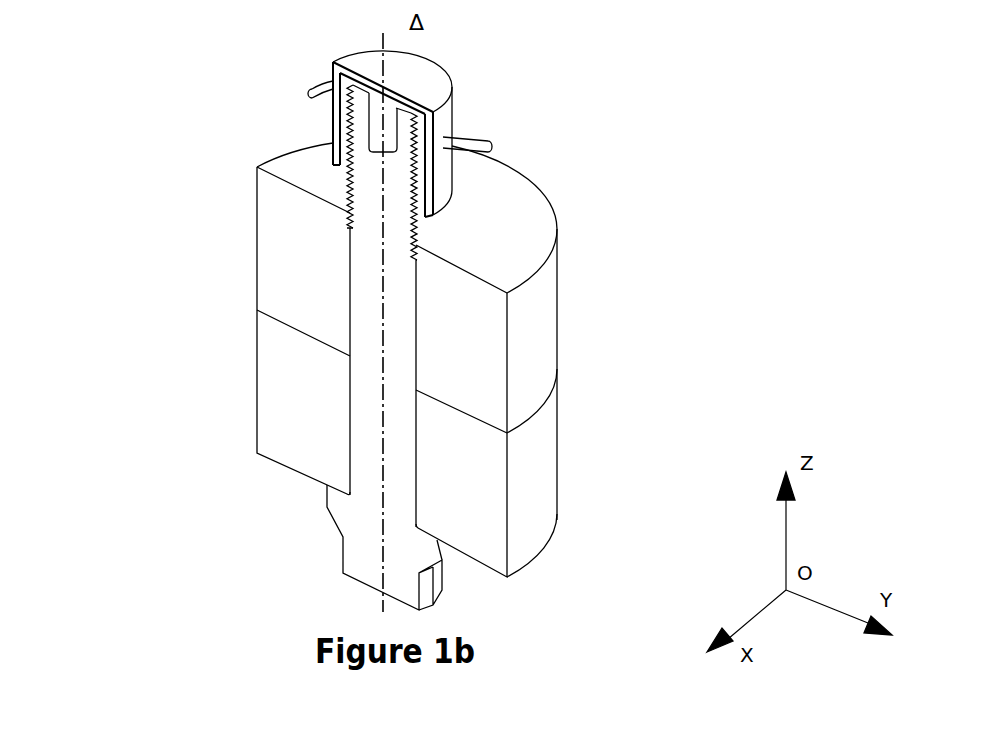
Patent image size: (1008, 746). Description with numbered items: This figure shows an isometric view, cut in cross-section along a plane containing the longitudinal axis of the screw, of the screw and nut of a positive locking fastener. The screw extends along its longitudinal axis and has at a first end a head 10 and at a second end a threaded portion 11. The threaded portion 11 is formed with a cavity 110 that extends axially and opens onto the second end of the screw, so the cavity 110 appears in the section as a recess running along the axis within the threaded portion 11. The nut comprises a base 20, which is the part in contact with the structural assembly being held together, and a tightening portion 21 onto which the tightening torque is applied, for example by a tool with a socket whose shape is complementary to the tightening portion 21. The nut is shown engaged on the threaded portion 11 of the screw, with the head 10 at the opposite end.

The head 10 is at (363, 537).
The threaded portion 11 is at (373, 184).
The base 20 is at (428, 245).
The tightening portion 21 is at (353, 170).
The cavity 110 is at (380, 143).